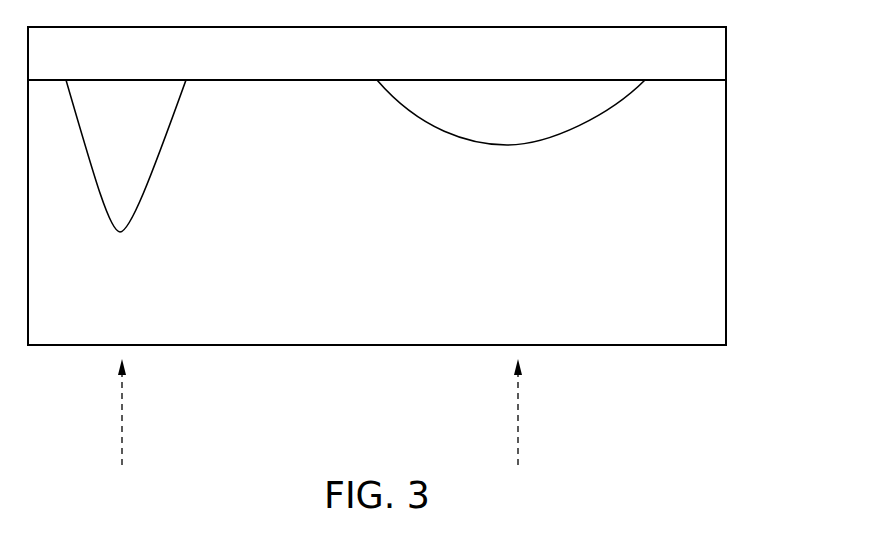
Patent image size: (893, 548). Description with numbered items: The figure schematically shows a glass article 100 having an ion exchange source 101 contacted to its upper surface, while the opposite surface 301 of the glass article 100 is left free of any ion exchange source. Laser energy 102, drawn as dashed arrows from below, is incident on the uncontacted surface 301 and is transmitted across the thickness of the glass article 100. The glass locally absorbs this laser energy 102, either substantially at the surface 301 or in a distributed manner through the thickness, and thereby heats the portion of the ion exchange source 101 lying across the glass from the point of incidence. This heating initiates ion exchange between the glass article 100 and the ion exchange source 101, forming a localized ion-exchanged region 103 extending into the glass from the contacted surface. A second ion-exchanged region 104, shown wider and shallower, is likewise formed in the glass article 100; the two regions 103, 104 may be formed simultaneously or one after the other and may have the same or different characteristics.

The glass article 100 is at (740, 80).
The ion exchange source 101 is at (727, 52).
The laser energy 102 is at (123, 428).
The ion-exchanged region 103 is at (160, 163).
The second ion-exchanged region 104 is at (535, 146).
The surface 301 is at (658, 346).